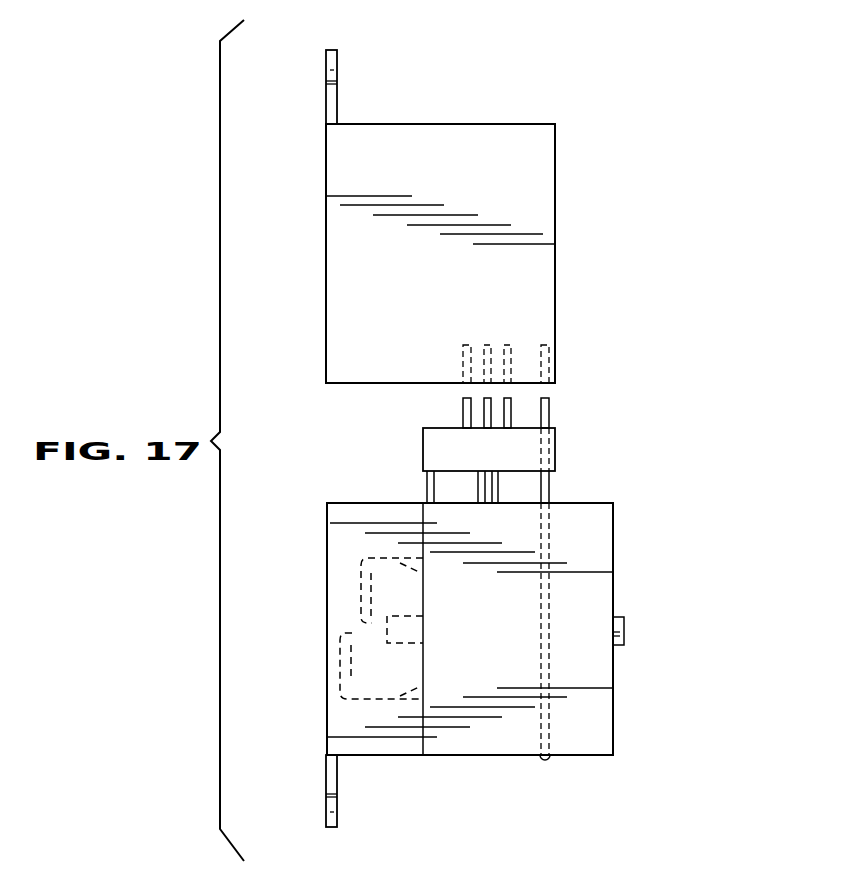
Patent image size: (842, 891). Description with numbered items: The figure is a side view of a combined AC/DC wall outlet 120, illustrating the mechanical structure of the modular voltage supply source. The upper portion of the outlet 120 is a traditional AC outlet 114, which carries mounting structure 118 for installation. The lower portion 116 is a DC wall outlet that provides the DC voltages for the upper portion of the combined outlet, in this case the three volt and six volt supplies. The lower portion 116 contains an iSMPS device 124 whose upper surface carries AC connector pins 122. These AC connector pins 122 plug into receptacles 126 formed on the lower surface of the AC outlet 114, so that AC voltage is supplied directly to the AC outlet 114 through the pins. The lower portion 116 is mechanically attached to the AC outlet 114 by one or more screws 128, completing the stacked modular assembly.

The AC outlet 114 is at (543, 166).
The lower portion 116 is at (592, 534).
The mounting structure 118 is at (337, 54).
The outlet 120 is at (606, 80).
The AC connector pins 122 is at (465, 403).
The iSMPS device 124 is at (433, 449).
The receptacles 126 is at (467, 345).
The screws 128 is at (550, 407).